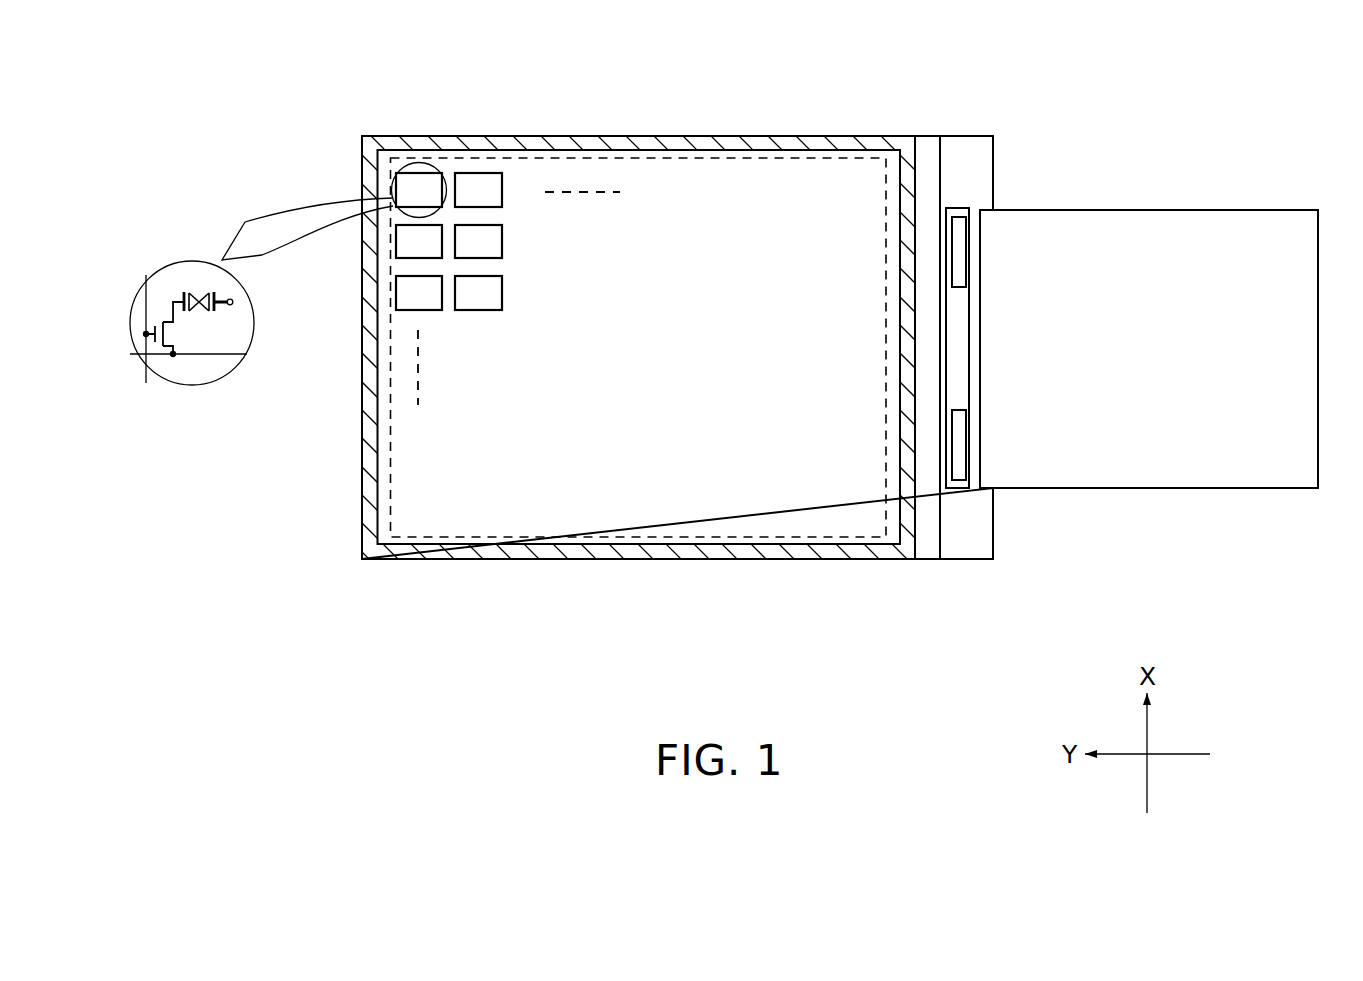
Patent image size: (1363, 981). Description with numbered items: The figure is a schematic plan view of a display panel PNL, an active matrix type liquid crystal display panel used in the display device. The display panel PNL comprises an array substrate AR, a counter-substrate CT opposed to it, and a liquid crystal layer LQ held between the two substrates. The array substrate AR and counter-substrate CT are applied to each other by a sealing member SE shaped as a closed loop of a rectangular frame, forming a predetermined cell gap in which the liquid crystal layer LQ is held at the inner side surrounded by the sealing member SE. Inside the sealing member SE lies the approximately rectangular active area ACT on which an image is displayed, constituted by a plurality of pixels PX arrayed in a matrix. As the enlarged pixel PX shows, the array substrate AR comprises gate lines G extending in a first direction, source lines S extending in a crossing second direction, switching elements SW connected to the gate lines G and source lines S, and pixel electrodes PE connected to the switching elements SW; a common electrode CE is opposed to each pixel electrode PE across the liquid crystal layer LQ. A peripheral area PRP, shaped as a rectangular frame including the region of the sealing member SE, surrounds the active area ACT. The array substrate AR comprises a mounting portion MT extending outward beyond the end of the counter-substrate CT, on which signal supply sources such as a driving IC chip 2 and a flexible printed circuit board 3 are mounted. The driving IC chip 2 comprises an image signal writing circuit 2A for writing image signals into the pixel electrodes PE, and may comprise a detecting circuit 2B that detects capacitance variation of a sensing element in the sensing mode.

The display panel PNL is at (965, 560).
The sealing member SE is at (717, 136).
The active area ACT is at (738, 542).
The counter-substrate CT is at (924, 552).
The peripheral area PRP is at (925, 143).
The pixel PX is at (418, 173).
The gate line G is at (146, 305).
The source line S is at (207, 355).
The switching element SW is at (177, 335).
The pixel electrode PE is at (184, 290).
The liquid crystal layer LQ is at (203, 288).
The common electrode CE is at (233, 302).
The driving IC chip 2 is at (958, 208).
The image signal writing circuit 2A is at (966, 255).
The detecting circuit 2B is at (967, 443).
The flexible printed circuit board 3 is at (1162, 210).
The mounting portion MT is at (972, 495).
The array substrate AR is at (983, 545).